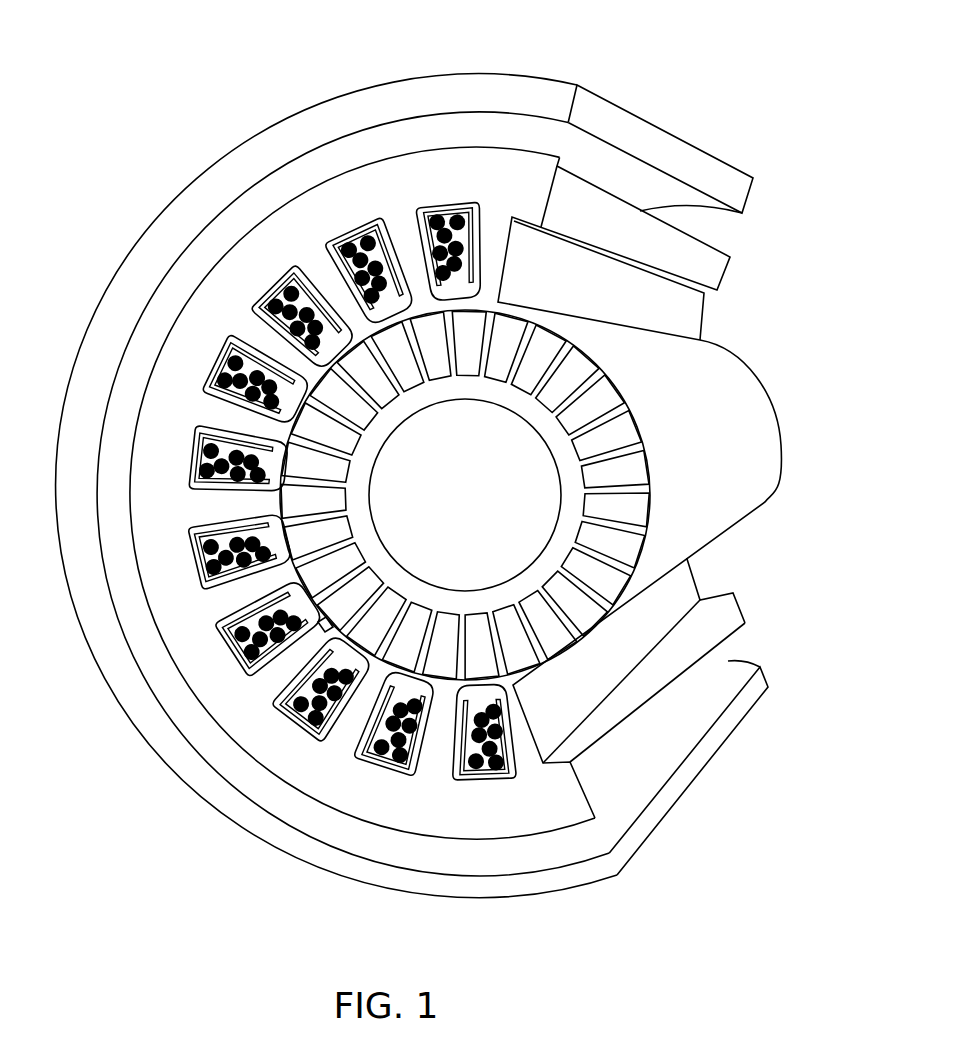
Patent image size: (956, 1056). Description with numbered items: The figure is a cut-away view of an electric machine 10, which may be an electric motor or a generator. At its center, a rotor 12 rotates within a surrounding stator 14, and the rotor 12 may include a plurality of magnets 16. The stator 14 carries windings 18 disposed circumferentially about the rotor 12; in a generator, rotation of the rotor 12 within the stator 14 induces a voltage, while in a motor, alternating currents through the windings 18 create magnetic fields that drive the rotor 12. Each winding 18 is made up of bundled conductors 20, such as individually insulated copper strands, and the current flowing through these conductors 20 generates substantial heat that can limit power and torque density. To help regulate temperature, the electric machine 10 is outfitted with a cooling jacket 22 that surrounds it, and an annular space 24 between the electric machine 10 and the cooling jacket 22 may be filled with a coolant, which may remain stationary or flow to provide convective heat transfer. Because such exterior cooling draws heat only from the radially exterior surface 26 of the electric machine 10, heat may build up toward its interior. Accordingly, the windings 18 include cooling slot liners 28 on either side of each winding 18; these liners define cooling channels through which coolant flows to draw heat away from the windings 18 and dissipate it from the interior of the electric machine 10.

The electric machine 10 is at (137, 773).
The rotor 12 is at (767, 418).
The stator 14 is at (225, 308).
The magnets 16 is at (620, 423).
The windings 18 is at (455, 212).
The bundled conductors 20 is at (440, 222).
The cooling jacket 22 is at (522, 78).
The annular space 24 is at (600, 833).
The radially exterior surface 26 is at (425, 140).
The cooling slot liners 28 is at (422, 242).